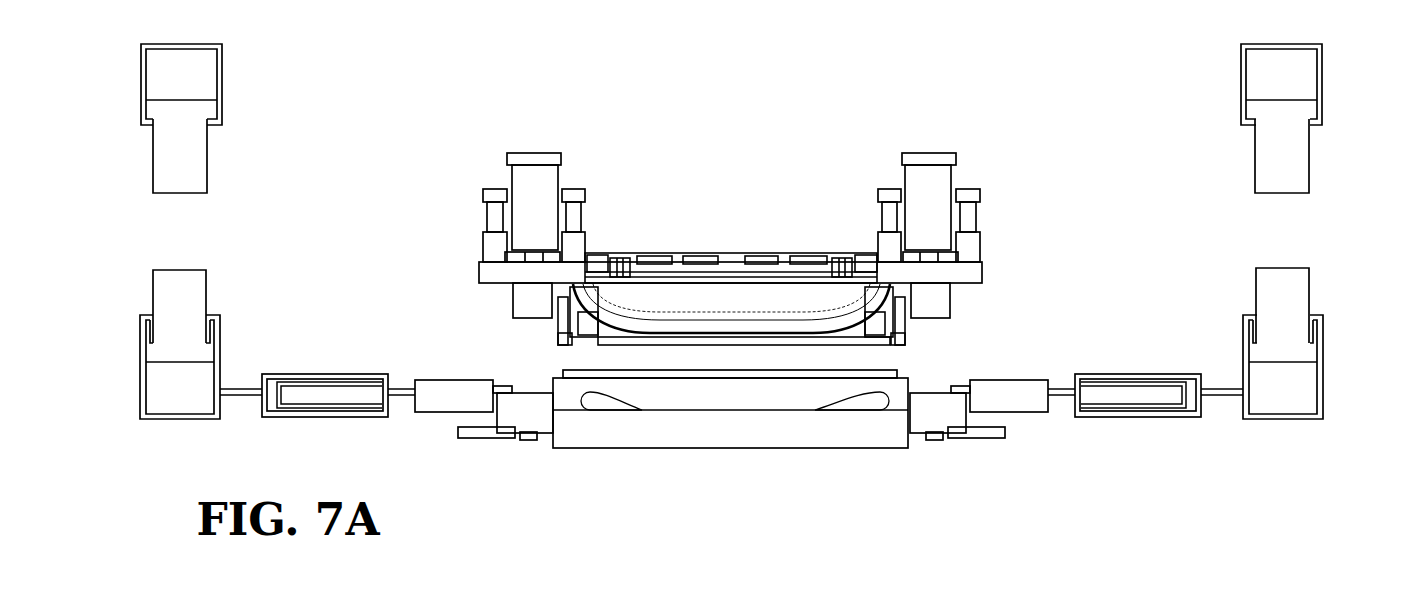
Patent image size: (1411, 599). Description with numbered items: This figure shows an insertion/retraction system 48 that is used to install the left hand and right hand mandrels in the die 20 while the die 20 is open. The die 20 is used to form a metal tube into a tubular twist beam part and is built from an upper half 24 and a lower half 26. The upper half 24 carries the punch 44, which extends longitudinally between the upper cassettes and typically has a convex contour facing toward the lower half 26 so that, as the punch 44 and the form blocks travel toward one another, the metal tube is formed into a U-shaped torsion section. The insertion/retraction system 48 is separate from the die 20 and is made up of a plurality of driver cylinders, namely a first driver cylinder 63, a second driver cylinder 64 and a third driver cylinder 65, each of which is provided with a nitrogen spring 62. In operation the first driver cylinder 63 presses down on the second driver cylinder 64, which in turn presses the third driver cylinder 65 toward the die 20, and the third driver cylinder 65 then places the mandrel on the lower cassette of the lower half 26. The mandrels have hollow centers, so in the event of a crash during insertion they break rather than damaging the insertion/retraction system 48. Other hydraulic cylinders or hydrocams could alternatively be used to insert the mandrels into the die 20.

The die 20 is at (655, 185).
The upper half 24 is at (725, 252).
The lower half 26 is at (648, 450).
The punch 44 is at (853, 325).
The insertion/retraction system 48 is at (1343, 230).
The nitrogen spring 62 is at (158, 62).
The first driver cylinder 63 is at (168, 163).
The second driver cylinder 64 is at (163, 282).
The third driver cylinder 65 is at (352, 397).